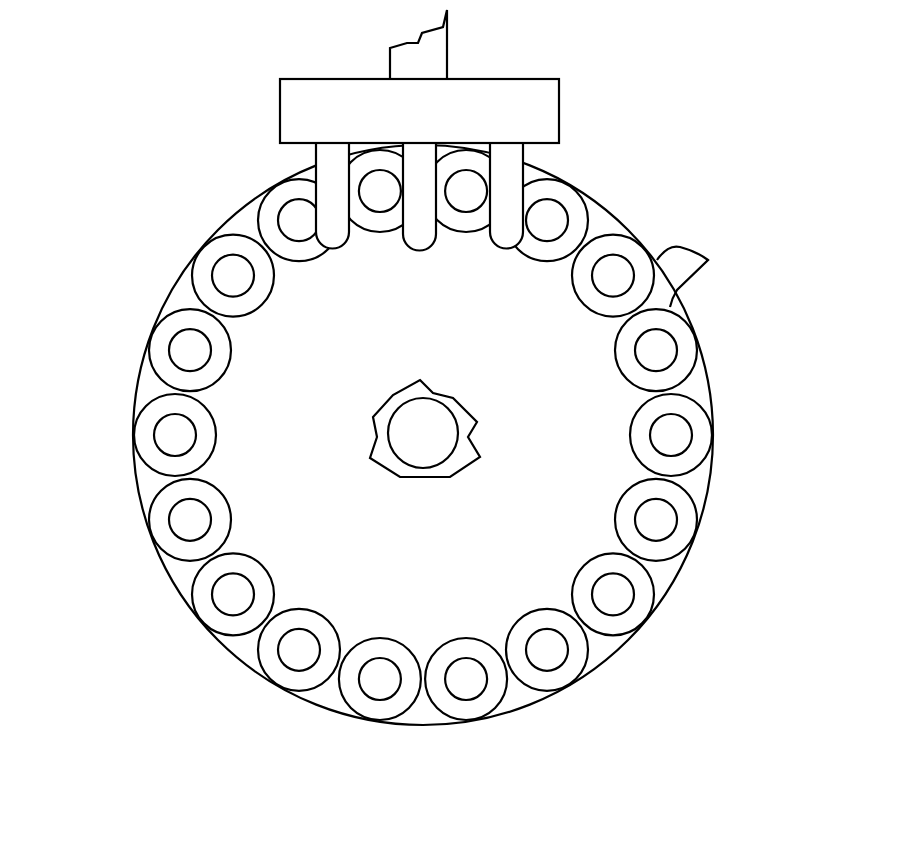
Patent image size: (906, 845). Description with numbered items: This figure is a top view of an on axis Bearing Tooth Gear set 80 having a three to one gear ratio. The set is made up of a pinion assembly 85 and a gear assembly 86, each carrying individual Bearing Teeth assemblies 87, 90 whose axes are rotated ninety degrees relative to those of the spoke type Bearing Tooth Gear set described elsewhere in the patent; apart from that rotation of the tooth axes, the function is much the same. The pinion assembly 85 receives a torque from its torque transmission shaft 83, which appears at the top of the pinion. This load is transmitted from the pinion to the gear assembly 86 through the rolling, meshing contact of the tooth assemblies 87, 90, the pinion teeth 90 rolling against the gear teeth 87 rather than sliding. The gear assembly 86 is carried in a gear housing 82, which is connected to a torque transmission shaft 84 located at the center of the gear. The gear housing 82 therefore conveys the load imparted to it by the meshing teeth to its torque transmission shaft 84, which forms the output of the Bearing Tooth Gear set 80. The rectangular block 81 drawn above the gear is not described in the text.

The on axis Bearing Tooth Gear set 80 is at (77, 422).
The tool holder block 81 is at (525, 112).
The gear housing 82 is at (474, 435).
The torque transmission shaft 83 is at (448, 32).
The torque transmission shaft 84 is at (427, 470).
The pinion assembly 85 is at (538, 79).
The gear assembly 86 is at (613, 212).
The Bearing Teeth assembly 87 is at (714, 272).
The Bearing Teeth assembly 90 is at (316, 158).